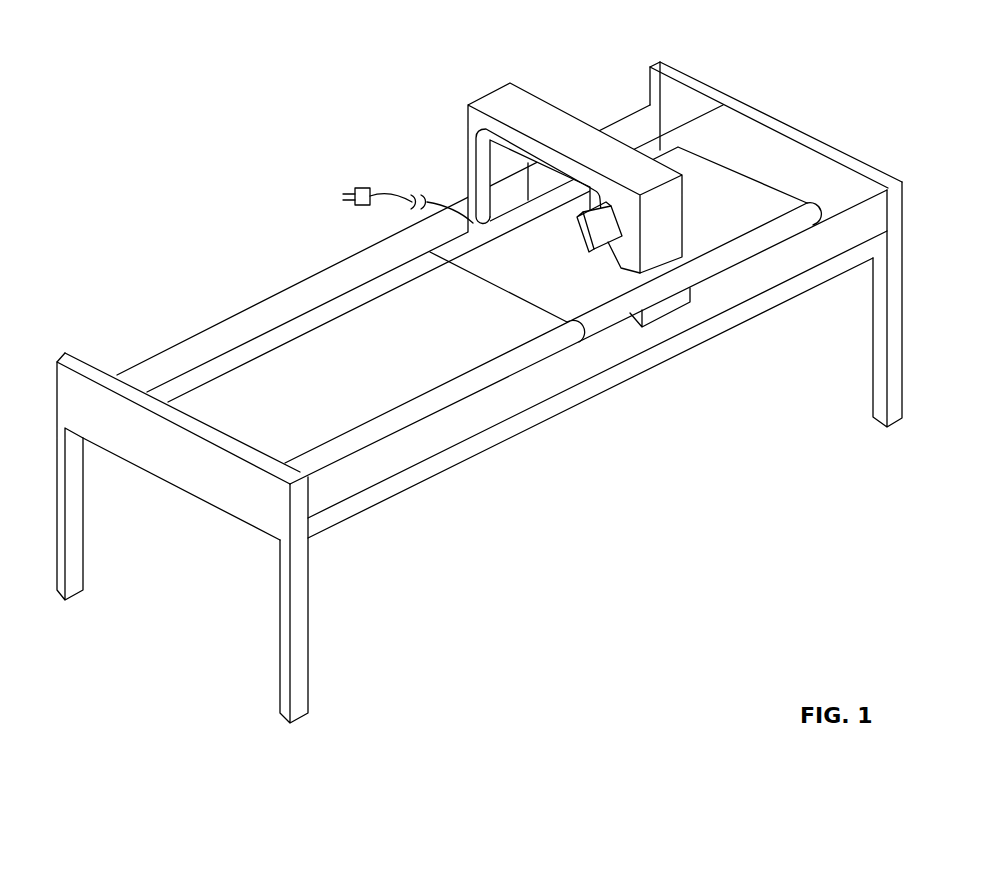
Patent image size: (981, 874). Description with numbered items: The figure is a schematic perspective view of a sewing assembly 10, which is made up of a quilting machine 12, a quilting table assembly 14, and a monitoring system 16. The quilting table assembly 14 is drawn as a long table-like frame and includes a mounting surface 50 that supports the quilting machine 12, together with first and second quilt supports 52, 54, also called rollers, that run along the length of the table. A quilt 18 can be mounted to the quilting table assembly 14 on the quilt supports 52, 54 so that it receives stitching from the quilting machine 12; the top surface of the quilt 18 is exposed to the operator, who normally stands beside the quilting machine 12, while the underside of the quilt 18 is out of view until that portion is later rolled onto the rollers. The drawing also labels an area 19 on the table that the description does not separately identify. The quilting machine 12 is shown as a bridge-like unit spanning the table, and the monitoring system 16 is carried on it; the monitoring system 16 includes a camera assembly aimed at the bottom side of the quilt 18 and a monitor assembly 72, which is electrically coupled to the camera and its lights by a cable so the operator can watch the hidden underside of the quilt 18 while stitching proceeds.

The sewing assembly 10 is at (479, 377).
The quilting machine 12 is at (486, 85).
The quilting table assembly 14 is at (187, 334).
The monitoring system 16 is at (574, 235).
The quilt 18 is at (480, 286).
The second bed section 19 is at (625, 234).
The mounting surface 50 is at (367, 364).
The first quilt support 52 is at (233, 361).
The second quilt support 54 is at (363, 436).
The monitor assembly 72 is at (594, 258).